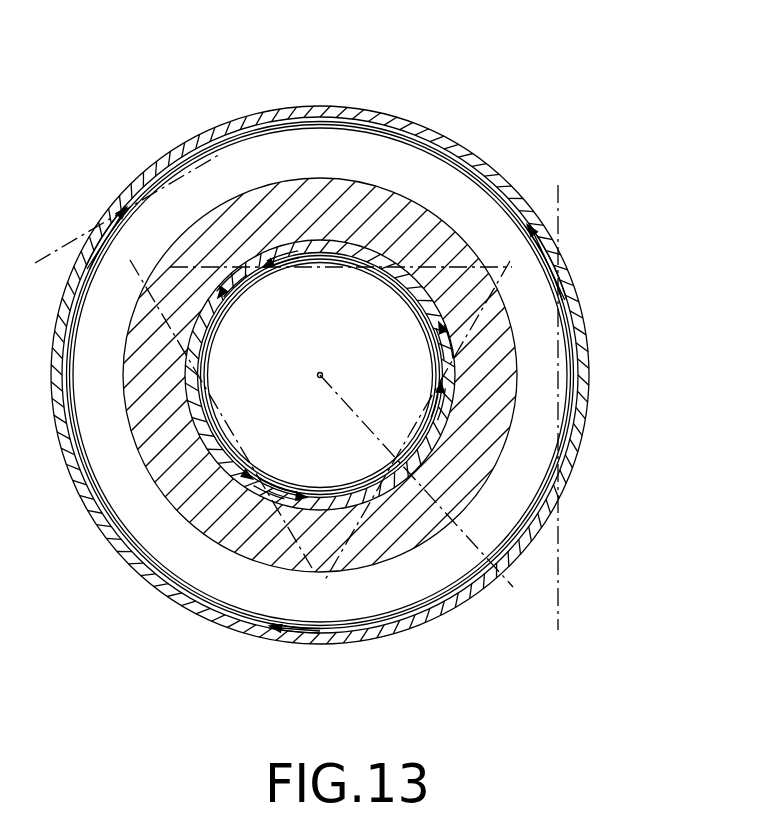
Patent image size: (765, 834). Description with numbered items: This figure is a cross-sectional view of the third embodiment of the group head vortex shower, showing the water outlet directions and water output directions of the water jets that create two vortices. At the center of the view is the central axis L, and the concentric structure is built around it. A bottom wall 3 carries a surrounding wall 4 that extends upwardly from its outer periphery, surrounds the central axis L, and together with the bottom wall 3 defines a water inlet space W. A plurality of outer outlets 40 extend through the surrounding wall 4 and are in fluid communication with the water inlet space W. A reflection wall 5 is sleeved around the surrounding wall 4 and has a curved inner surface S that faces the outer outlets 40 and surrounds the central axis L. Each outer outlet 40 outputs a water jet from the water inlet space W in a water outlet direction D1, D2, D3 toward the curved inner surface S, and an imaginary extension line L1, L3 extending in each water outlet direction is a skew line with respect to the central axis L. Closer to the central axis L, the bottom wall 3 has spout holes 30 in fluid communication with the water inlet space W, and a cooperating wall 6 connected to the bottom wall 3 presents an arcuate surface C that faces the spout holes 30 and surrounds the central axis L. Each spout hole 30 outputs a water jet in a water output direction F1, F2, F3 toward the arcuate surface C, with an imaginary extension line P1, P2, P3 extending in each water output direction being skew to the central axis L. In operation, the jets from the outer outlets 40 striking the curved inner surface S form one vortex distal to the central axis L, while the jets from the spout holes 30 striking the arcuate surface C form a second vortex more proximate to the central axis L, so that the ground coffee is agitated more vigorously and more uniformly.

The bottom wall 3 is at (385, 321).
The surrounding wall 4 is at (497, 182).
The reflection wall 5 is at (396, 107).
The cooperating wall 6 is at (195, 430).
The spout holes 30 is at (263, 262).
The outer outlets 40 is at (126, 200).
The arcuate surface C is at (188, 408).
The curved inner surface S is at (405, 150).
The central axis L is at (426, 498).
The water inlet space W is at (428, 566).
The imaginary extension line L1 is at (563, 425).
The imaginary extension line L3 is at (308, 107).
The imaginary extension line P1 is at (328, 572).
The imaginary extension line P2 is at (308, 284).
The imaginary extension line P3 is at (503, 250).
The water output direction F1 is at (416, 396).
The water output direction F2 is at (278, 464).
The water output direction F3 is at (291, 277).
The water outlet direction D1 is at (549, 363).
The water outlet direction D2 is at (242, 580).
The water outlet direction D3 is at (182, 207).